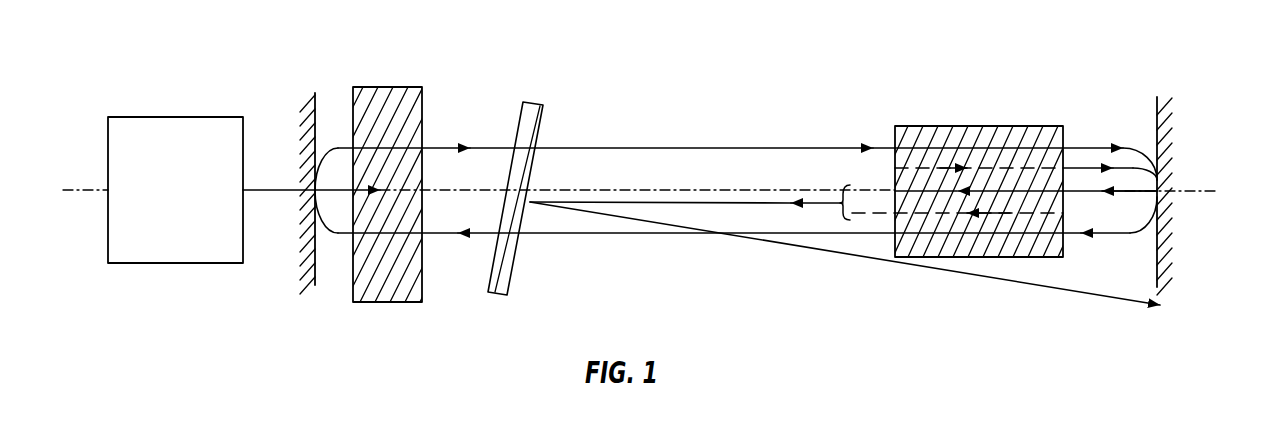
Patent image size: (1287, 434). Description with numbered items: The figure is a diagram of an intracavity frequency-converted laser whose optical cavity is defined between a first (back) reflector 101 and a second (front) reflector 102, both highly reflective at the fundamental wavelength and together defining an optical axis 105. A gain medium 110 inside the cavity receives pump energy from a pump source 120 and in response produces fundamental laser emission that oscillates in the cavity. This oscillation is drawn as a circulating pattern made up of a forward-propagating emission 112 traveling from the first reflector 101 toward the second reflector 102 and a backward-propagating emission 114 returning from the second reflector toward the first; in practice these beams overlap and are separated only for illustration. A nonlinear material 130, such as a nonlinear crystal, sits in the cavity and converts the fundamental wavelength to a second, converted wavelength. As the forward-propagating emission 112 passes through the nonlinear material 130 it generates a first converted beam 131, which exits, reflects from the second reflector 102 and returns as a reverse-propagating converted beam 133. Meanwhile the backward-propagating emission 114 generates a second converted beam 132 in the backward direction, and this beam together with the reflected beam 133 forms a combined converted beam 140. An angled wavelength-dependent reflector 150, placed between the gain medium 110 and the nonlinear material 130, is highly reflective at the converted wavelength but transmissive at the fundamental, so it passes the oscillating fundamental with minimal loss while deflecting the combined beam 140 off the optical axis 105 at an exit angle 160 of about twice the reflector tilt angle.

The first reflector 101 is at (315, 93).
The second reflector 102 is at (1156, 105).
The optical axis 105 is at (80, 192).
The gain medium 110 is at (422, 87).
The forward-propagating emission 112 is at (658, 148).
The backward-propagating emission 114 is at (670, 233).
The pump source 120 is at (178, 117).
The nonlinear material 130 is at (913, 126).
The first converted beam 131 is at (993, 167).
The second converted beam 132 is at (917, 213).
The reverse-propagating converted beam 133 is at (1077, 167).
The combined converted beam 140 is at (725, 203).
The angled wavelength-dependent reflector 150 is at (543, 102).
The exit angle 160 is at (634, 198).